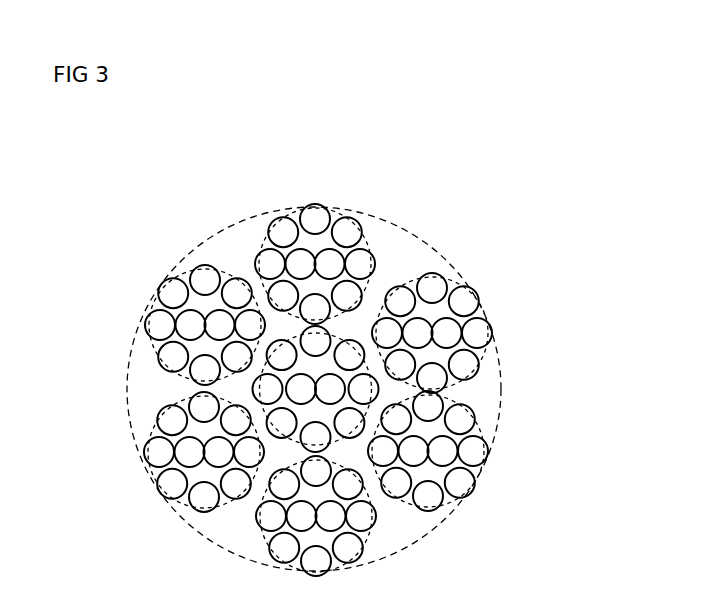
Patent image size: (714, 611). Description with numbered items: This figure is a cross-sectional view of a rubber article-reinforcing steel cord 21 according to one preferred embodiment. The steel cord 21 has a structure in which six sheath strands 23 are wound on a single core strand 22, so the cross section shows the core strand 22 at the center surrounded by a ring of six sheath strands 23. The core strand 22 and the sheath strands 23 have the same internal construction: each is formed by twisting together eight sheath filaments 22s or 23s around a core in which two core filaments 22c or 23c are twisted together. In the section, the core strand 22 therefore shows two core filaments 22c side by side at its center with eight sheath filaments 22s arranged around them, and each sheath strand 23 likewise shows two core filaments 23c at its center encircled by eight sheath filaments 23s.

The steel cord 21 is at (491, 213).
The core strand 22 is at (574, 442).
The core filaments 22c is at (466, 453).
The sheath filaments 22s is at (352, 386).
The sheath strands 23 is at (606, 320).
The core filaments 23c is at (489, 326).
The sheath filaments 23s is at (474, 357).